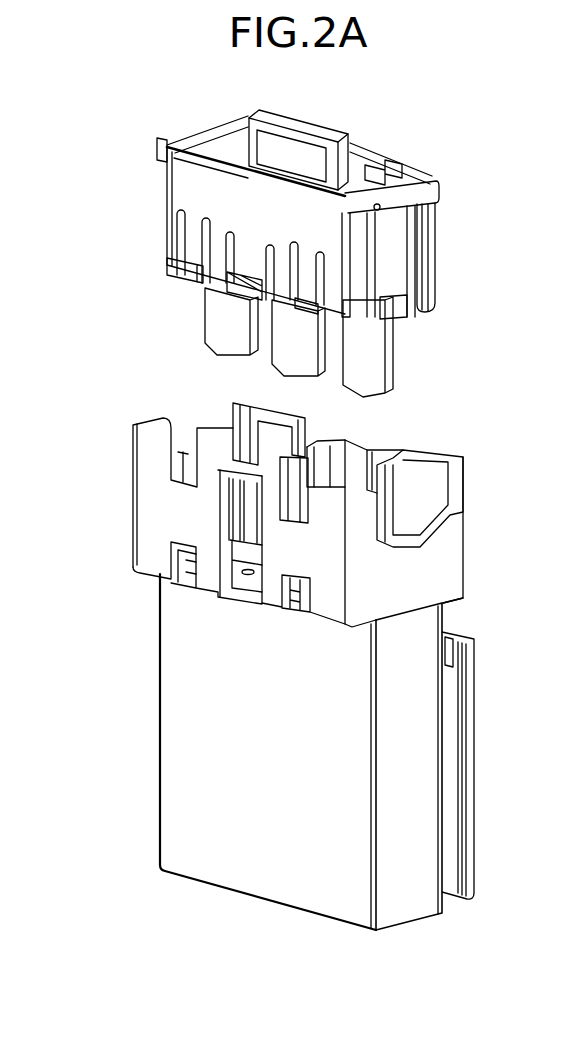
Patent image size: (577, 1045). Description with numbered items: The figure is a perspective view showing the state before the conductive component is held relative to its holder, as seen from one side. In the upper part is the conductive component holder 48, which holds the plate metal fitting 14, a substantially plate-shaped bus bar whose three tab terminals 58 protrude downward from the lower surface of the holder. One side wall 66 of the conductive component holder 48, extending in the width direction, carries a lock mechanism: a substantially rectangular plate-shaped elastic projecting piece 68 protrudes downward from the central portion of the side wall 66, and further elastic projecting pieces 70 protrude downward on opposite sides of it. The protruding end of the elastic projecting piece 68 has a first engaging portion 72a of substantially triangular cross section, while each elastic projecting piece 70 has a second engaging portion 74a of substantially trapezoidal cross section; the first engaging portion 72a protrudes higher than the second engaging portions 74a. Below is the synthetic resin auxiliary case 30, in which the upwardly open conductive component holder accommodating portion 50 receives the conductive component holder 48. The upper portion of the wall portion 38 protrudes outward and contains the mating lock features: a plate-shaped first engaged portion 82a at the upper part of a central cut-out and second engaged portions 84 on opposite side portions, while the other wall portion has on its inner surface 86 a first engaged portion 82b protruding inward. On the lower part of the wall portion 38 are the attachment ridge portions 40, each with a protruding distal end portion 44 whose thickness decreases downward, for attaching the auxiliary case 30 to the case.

The conductive component holder 48 is at (425, 135).
The plate metal fitting 14 is at (414, 347).
The elastic projecting piece 68 is at (248, 252).
The side wall 66 is at (185, 192).
The elastic projecting pieces 70 is at (193, 232).
The second engaging portion 74a is at (207, 275).
The first engaging portion 72a is at (250, 281).
The tab terminals 58 is at (223, 323).
The first engaged portion 82a is at (242, 465).
The first engaged portion 82b is at (305, 455).
The second engaged portions 84 is at (183, 513).
The inner surface 86 is at (360, 473).
The conductive component holder accommodating portion 50 is at (412, 502).
The auxiliary case 30 is at (410, 705).
The wall portion 38 is at (198, 775).
The attachment ridge portions 40 is at (453, 753).
The protruding distal end portion 44 is at (467, 771).